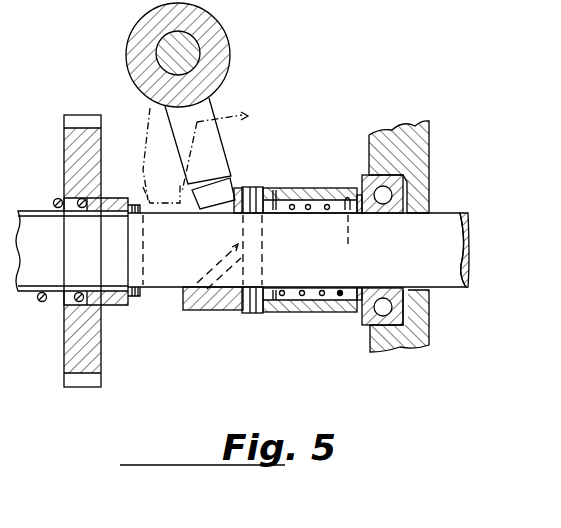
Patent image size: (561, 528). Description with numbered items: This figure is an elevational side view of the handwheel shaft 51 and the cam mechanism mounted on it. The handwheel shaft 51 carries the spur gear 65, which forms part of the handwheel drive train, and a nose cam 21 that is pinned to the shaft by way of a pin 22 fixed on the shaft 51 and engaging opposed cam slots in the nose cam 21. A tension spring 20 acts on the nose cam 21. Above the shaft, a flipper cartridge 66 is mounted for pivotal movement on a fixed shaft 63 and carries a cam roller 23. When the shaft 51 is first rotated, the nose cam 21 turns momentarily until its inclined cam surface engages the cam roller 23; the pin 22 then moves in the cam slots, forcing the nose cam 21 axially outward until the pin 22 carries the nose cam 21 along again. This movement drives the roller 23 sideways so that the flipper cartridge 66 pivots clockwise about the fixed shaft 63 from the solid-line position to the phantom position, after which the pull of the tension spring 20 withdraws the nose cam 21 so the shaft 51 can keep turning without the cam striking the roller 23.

The tension spring 20 is at (308, 295).
The nose cam 21 is at (220, 300).
The pin 22 is at (248, 310).
The cam roller 23 is at (232, 184).
The handwheel shaft 51 is at (163, 288).
The fixed shaft 63 is at (203, 40).
The spur gear 65 is at (83, 120).
The flipper cartridge 66 is at (217, 64).